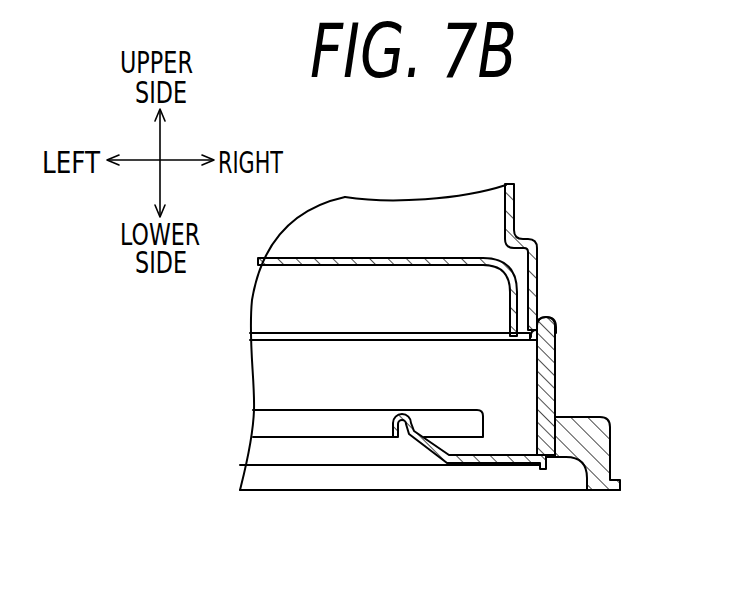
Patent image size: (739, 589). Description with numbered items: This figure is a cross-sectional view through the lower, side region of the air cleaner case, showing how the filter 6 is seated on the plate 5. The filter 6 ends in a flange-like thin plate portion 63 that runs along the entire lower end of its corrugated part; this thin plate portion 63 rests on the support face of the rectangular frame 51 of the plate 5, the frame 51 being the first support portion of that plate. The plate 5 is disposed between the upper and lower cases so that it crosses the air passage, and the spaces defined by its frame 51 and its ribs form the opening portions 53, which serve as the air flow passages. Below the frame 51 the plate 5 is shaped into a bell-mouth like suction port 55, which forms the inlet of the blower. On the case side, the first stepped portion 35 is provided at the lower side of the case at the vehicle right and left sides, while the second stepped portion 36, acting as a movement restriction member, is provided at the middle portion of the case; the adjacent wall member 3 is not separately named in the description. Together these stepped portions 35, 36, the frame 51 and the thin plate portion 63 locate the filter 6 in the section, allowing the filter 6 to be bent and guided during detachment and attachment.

The filter 6 is at (387, 250).
The thin plate portion 63 is at (542, 303).
The second stepped portion 36 is at (544, 316).
The casing 3 is at (564, 371).
The first stepped portion 35 is at (573, 424).
The plate 5 is at (281, 496).
The suction port 55 is at (355, 427).
The rectangular frame 51 is at (523, 340).
The opening portion 53 is at (553, 458).